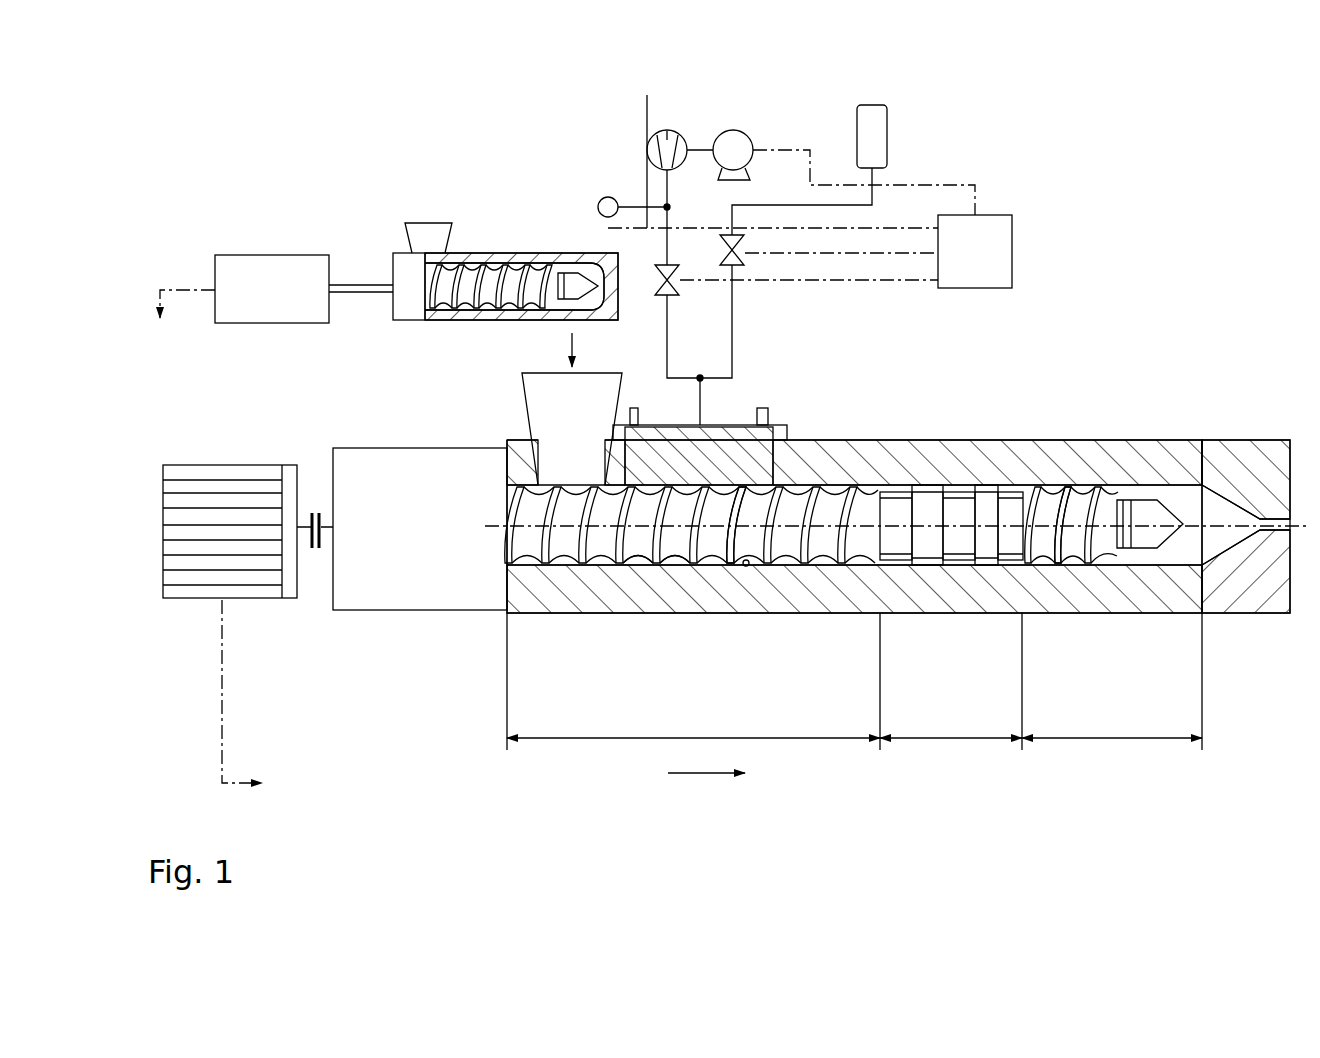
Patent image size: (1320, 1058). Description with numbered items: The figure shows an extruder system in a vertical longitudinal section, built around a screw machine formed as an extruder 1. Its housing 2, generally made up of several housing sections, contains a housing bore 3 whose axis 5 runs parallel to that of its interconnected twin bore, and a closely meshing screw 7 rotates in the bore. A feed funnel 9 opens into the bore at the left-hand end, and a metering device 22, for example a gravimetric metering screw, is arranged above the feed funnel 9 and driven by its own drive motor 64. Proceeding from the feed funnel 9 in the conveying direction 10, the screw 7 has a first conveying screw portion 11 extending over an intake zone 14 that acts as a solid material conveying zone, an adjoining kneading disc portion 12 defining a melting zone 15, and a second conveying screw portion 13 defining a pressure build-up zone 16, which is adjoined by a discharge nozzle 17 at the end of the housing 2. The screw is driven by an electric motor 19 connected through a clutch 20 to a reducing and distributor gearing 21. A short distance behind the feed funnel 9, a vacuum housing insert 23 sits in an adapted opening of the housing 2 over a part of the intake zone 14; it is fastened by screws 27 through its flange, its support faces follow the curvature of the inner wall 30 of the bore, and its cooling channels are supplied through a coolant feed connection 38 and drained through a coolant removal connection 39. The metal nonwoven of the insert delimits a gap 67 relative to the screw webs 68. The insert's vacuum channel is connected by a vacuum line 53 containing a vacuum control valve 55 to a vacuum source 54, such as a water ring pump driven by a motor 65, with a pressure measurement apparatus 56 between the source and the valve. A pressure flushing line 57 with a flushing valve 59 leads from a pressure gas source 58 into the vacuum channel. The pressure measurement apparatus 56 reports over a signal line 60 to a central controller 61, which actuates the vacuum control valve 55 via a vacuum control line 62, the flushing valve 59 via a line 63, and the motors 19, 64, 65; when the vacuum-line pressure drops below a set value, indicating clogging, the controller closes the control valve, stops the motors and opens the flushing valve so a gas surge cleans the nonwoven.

The extruder 1 is at (1160, 275).
The housing 2 is at (1120, 470).
The housing bore 3 is at (1056, 487).
The axis 5 is at (1195, 520).
The screw 7 is at (1078, 477).
The feed funnel 9 is at (536, 408).
The conveying direction 10 is at (704, 778).
The first conveying screw portion 11 is at (793, 500).
The kneading disc portion 12 is at (958, 497).
The second conveying screw portion 13 is at (1052, 498).
The intake zone 14 is at (693, 681).
The melting zone 15 is at (951, 681).
The pressure build-up zone 16 is at (1112, 681).
The discharge nozzle 17 is at (1275, 510).
The electric motor 19 is at (195, 600).
The clutch 20 is at (323, 550).
The reducing and distributor gearing 21 is at (418, 610).
The metering device 22 is at (482, 253).
The vacuum housing insert 23 is at (663, 423).
The screw 27 is at (607, 443).
The inner wall 30 is at (744, 565).
The coolant feed connection 38 is at (634, 408).
The coolant removal connection 39 is at (760, 408).
The vacuum line 53 is at (666, 340).
The vacuum source 54 is at (668, 130).
The vacuum control valve 55 is at (663, 268).
The pressure measurement apparatus 56 is at (605, 197).
The pressure flushing line 57 is at (740, 312).
The pressure gas source 58 is at (870, 110).
The flushing valve 59 is at (740, 260).
The signal line 60 is at (630, 146).
The central controller 61 is at (997, 220).
The vacuum control line 62 is at (850, 278).
The line 63 is at (797, 253).
The drive motor 64 is at (262, 263).
The motor 65 is at (733, 130).
The gap 67 is at (654, 568).
The screw web 68 is at (617, 568).